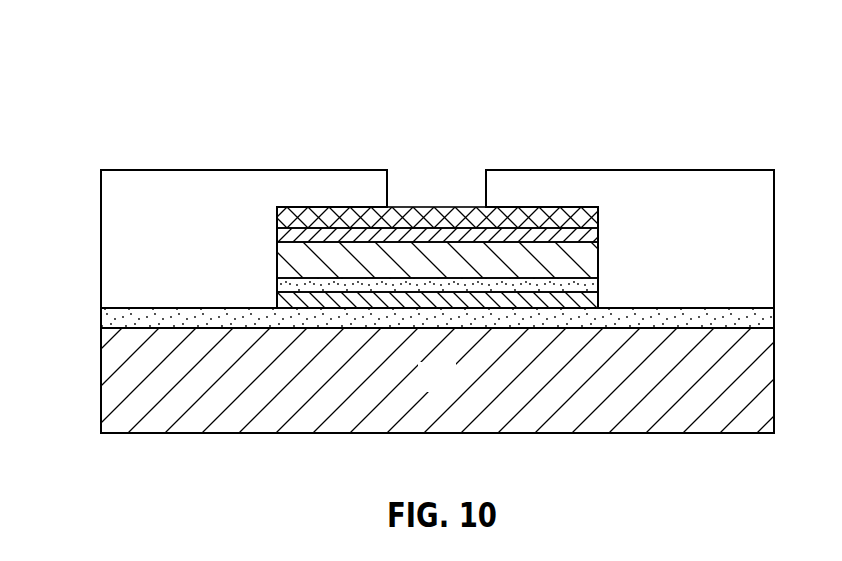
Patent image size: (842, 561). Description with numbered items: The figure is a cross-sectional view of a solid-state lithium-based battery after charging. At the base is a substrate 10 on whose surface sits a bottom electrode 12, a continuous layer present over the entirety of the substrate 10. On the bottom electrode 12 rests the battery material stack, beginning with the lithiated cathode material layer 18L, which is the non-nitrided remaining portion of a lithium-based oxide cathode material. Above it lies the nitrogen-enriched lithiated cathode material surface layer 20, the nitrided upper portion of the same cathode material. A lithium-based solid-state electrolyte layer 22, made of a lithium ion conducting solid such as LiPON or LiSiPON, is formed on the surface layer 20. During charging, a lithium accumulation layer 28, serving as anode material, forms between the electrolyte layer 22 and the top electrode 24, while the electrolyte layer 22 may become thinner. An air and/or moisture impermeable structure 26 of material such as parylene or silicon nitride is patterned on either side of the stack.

The substrate 10 is at (450, 388).
The bottom electrode 12 is at (112, 320).
The lithiated cathode material layer 18L is at (332, 302).
The nitrogen-enriched lithiated cathode material surface layer 20 is at (356, 290).
The lithium-based solid-state electrolyte layer 22 is at (379, 262).
The top electrode 24 is at (527, 217).
The air and/or moisture impermeable structure 26 is at (194, 250).
The lithium accumulation layer 28 is at (548, 237).